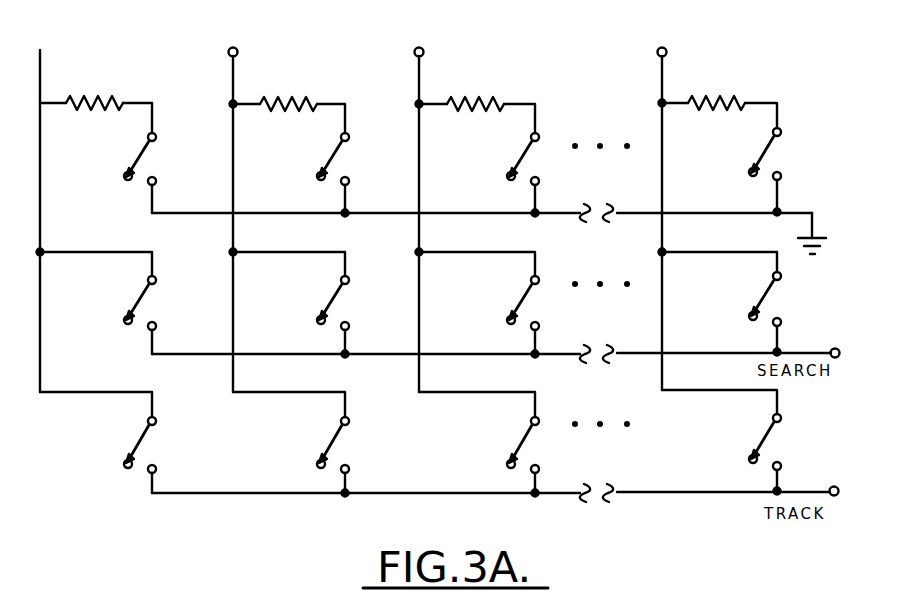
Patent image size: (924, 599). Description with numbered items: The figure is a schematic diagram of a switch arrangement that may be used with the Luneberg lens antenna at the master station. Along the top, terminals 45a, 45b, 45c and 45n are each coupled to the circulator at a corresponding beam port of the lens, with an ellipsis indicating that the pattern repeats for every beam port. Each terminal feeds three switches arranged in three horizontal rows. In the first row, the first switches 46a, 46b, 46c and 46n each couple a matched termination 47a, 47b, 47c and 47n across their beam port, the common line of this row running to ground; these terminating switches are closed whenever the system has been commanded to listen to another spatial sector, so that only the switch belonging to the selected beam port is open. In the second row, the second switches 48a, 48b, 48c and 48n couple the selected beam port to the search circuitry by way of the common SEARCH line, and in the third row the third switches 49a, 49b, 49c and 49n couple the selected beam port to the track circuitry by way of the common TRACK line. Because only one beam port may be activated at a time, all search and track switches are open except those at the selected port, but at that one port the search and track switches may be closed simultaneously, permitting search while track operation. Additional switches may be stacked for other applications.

The terminal 45a is at (40, 50).
The terminal 45b is at (235, 48).
The terminal 45c is at (419, 47).
The terminal 45n is at (661, 47).
The matched termination 47a is at (95, 96).
The matched termination 47b is at (288, 97).
The matched termination 47c is at (475, 97).
The matched termination 47n is at (720, 96).
The first switch 46a is at (141, 162).
The first switch 46b is at (336, 162).
The first switch 46c is at (514, 161).
The first switch 46n is at (775, 157).
The second switch 48a is at (148, 298).
The second switch 48b is at (343, 298).
The second switch 48c is at (519, 298).
The second switch 48n is at (780, 295).
The third switch 49a is at (148, 438).
The third switch 49b is at (345, 438).
The third switch 49c is at (519, 437).
The third switch 49n is at (780, 435).